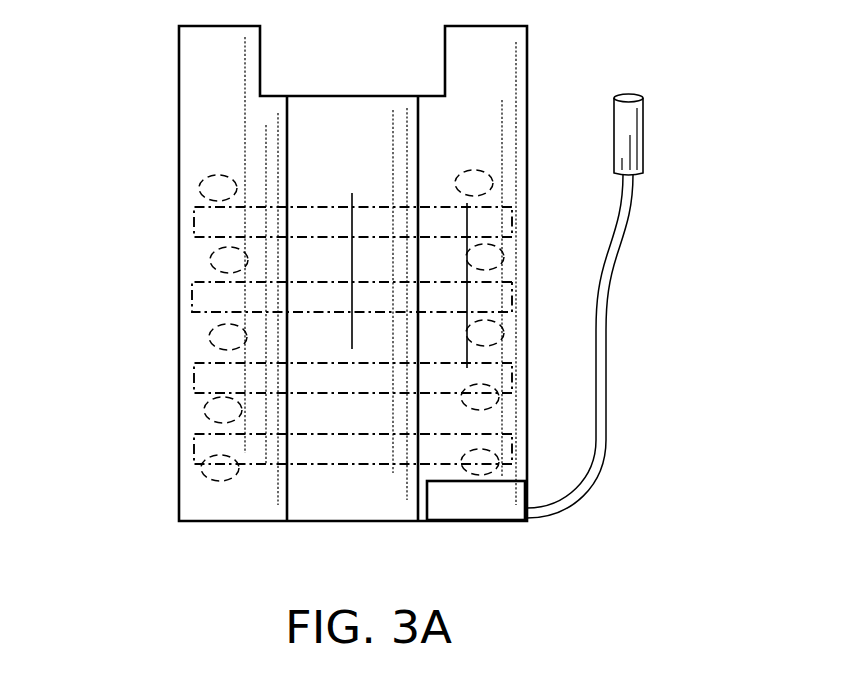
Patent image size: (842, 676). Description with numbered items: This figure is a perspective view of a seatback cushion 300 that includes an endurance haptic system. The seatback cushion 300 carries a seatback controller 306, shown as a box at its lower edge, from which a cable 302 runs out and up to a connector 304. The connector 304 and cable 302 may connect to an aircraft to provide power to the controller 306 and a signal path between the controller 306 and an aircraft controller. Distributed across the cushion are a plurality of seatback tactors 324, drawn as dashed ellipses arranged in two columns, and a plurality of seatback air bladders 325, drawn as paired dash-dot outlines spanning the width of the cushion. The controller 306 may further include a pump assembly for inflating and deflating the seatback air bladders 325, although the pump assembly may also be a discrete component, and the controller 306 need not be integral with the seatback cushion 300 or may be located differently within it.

The seatback cushion 300 is at (133, 148).
The cable 302 is at (607, 290).
The connector 304 is at (641, 137).
The seatback controller 306 is at (498, 512).
The seatback tactors 324 is at (213, 262).
The seatback air bladders 325 is at (195, 372).